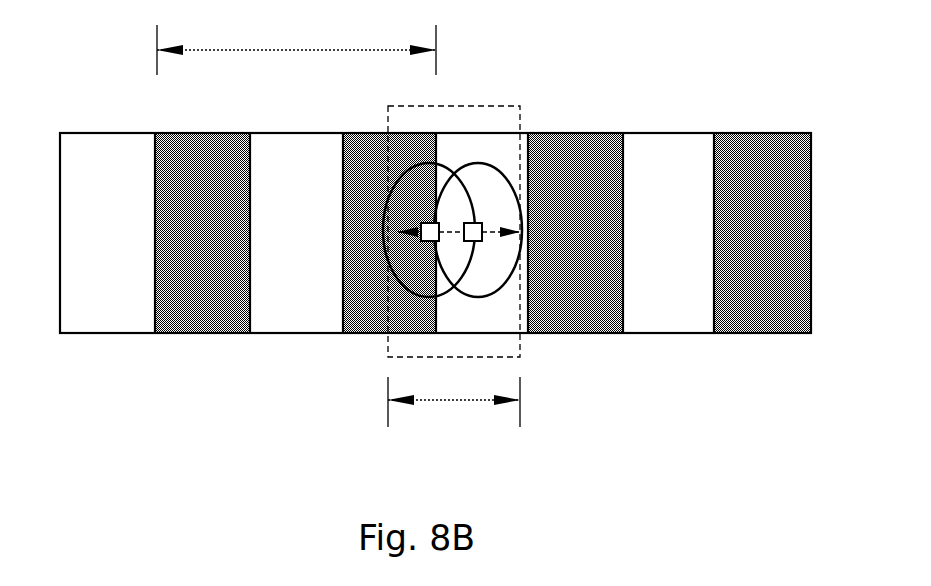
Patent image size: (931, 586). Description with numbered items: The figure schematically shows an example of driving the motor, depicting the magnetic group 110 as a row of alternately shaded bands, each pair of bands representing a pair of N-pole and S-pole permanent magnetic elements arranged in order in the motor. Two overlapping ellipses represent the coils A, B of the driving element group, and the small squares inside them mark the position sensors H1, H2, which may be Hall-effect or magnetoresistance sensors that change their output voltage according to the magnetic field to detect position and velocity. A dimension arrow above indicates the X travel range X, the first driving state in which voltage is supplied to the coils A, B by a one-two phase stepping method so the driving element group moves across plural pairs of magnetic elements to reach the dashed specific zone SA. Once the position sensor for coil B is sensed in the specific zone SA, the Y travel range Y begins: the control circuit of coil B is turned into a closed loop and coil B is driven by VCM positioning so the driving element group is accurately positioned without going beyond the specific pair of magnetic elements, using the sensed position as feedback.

The magnetic group 110 is at (672, 133).
The specific zone SA is at (477, 106).
The coil A is at (386, 252).
The coil B is at (503, 283).
The position sensor H1 is at (421, 223).
The position sensor H2 is at (475, 222).
The X travel range X is at (296, 41).
The Y travel range Y is at (454, 418).